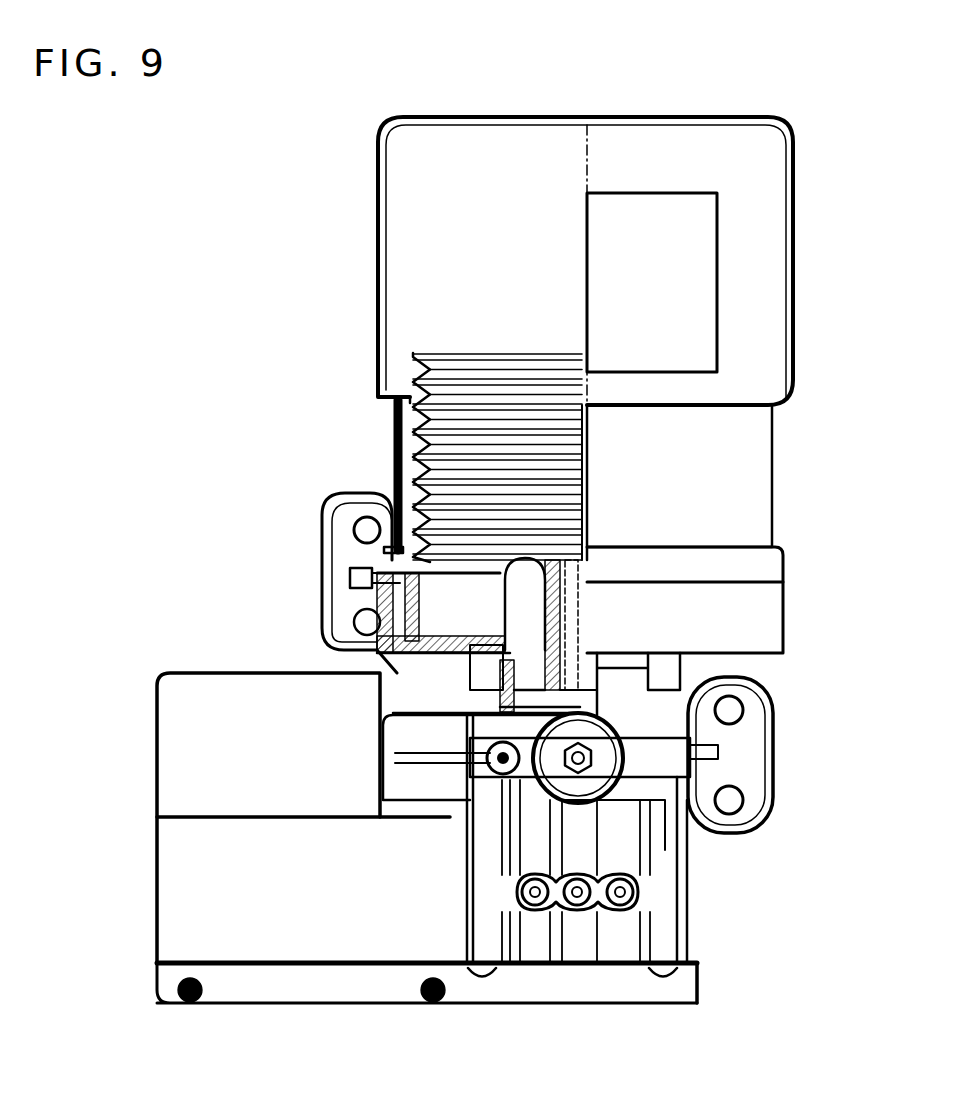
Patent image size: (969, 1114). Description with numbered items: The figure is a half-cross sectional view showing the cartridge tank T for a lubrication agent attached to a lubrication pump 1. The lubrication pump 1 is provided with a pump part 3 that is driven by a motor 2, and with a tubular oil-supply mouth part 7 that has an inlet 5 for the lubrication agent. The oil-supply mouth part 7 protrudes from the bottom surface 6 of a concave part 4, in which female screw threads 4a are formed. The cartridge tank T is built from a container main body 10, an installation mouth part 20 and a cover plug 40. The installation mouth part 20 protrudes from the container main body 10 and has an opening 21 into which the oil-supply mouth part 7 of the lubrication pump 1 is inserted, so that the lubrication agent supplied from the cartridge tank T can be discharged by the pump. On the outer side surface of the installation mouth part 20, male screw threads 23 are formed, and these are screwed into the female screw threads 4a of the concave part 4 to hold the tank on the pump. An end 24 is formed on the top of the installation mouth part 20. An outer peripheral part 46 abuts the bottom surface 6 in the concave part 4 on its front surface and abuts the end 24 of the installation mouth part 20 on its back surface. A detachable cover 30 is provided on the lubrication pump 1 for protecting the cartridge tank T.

The detachable cover 30 is at (750, 205).
The container main body 10 is at (560, 392).
The cartridge tank for a lubrication agent T is at (575, 530).
The oil-supply mouth part 7 is at (545, 550).
The opening 21 is at (540, 580).
The installation mouth part 20 is at (500, 602).
The concave part 4 is at (350, 540).
The female screw threads 4a is at (355, 578).
The male screw threads 23 is at (585, 592).
The cover plug 40 is at (582, 640).
The motor 2 is at (190, 727).
The lubrication pump 1 is at (190, 910).
The inlet 5 is at (575, 665).
The outer peripheral part 46 is at (618, 722).
The pump part 3 is at (640, 795).
The end 24 is at (545, 735).
The bottom surface 6 is at (563, 717).